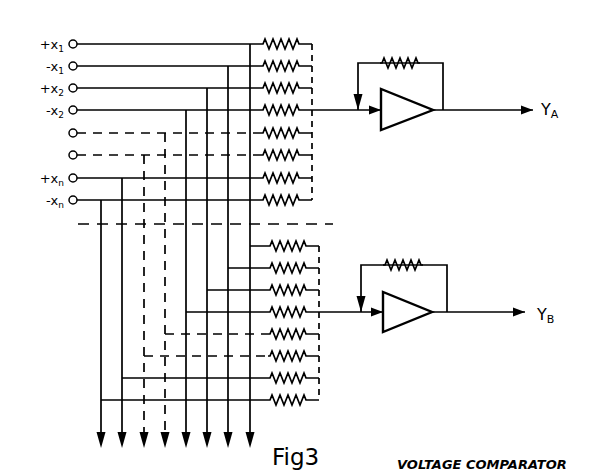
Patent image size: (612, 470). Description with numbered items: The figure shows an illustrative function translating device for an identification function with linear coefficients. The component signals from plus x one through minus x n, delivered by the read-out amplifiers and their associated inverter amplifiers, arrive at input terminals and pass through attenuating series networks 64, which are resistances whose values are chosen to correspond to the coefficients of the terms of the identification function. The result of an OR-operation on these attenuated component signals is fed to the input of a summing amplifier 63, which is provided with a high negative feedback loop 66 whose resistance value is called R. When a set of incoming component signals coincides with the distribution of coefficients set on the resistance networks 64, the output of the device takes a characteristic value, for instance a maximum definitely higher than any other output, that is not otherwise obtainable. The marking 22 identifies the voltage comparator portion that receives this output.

The attenuating series networks 64 is at (286, 113).
The negative feedback loop 66 is at (399, 78).
The summing amplifier 63 is at (407, 116).
The voltage comparator 22 is at (317, 297).